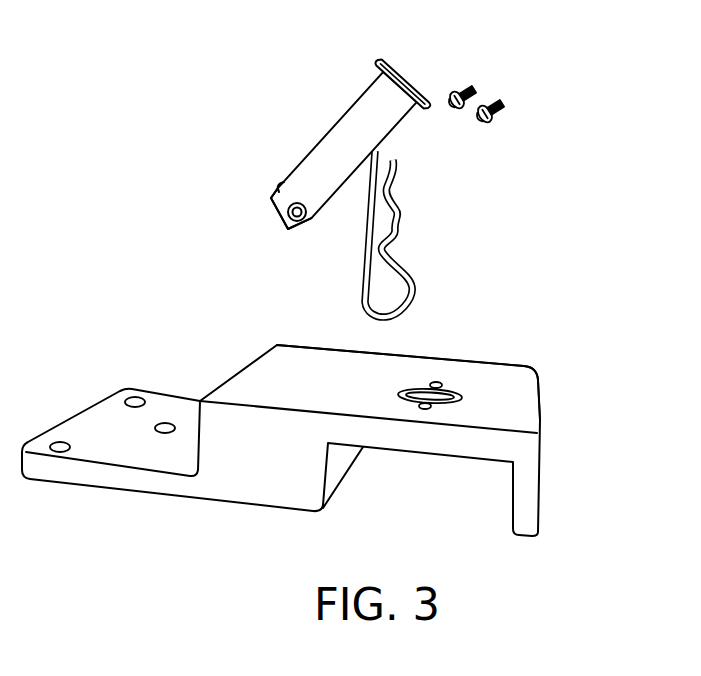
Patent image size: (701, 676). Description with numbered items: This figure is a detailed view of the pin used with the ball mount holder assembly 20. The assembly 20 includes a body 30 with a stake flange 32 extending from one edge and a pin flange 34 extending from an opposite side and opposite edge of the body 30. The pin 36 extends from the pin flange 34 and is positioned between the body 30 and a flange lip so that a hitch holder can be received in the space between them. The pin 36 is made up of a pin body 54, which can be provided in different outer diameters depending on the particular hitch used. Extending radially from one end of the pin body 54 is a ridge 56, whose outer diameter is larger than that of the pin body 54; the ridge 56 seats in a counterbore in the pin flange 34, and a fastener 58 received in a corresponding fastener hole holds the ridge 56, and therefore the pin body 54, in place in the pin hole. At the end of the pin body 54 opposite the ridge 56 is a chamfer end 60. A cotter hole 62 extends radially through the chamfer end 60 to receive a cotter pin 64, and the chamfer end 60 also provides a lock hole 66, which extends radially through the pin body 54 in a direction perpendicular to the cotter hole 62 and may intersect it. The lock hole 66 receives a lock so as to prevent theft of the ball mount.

The ball mount holder assembly 20 is at (586, 172).
The body 30 is at (294, 367).
The stake flange 32 is at (162, 408).
The pin flange 34 is at (488, 375).
The pin 36 is at (266, 122).
The pin body 54 is at (350, 120).
The ridge 56 is at (381, 64).
The fastener 58 is at (483, 123).
The chamfer end 60 is at (271, 202).
The cotter hole 62 is at (279, 189).
The cotter pin 64 is at (397, 231).
The lock hole 66 is at (306, 219).